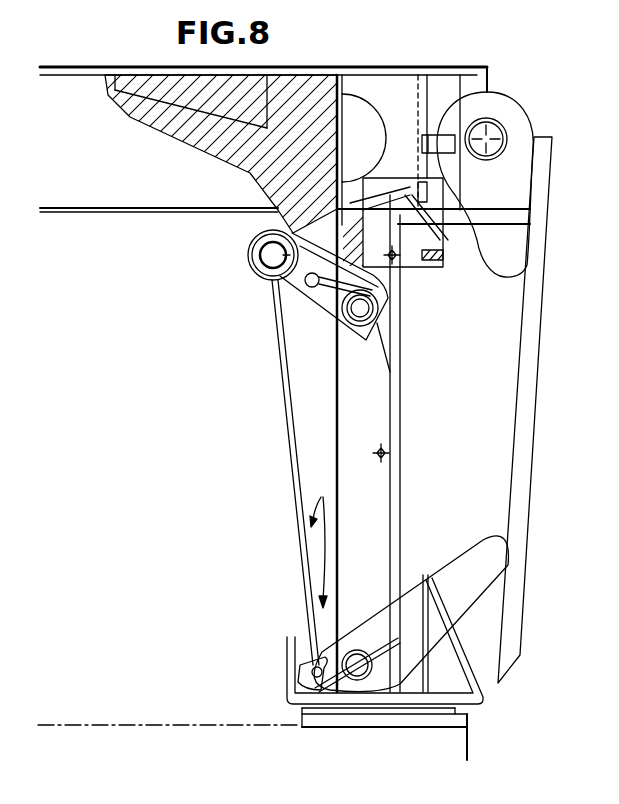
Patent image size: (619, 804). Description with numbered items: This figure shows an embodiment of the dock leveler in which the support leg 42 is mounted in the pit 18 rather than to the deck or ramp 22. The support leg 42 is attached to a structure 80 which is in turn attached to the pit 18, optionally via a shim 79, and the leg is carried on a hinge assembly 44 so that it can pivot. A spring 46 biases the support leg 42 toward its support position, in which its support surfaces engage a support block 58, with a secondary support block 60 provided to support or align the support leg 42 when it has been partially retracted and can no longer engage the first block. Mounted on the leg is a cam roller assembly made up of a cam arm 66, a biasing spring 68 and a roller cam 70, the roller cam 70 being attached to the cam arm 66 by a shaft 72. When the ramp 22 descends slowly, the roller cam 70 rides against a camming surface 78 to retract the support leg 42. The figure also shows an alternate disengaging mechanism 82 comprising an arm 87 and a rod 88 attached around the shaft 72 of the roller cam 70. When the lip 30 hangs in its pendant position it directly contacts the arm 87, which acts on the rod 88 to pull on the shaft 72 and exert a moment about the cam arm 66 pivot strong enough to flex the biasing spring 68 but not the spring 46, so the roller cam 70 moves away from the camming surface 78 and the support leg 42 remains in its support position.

The pit 18 is at (182, 722).
The deck or ramp 22 is at (157, 67).
The lip 30 is at (536, 400).
The support leg 42 is at (336, 452).
The hinge assembly 44 is at (313, 637).
The spring 46 is at (300, 683).
The support block 58 is at (413, 262).
The secondary support block 60 is at (283, 97).
The cam arm 66 is at (320, 297).
The biasing spring 68 is at (380, 348).
The roller cam 70 is at (247, 249).
The shaft 72 is at (255, 270).
The camming surface 78 is at (172, 138).
The shim 79 is at (458, 720).
The structure 80 is at (287, 656).
The disengaging mechanism 82 is at (317, 541).
The arm 87 is at (470, 598).
The rod 88 is at (298, 531).